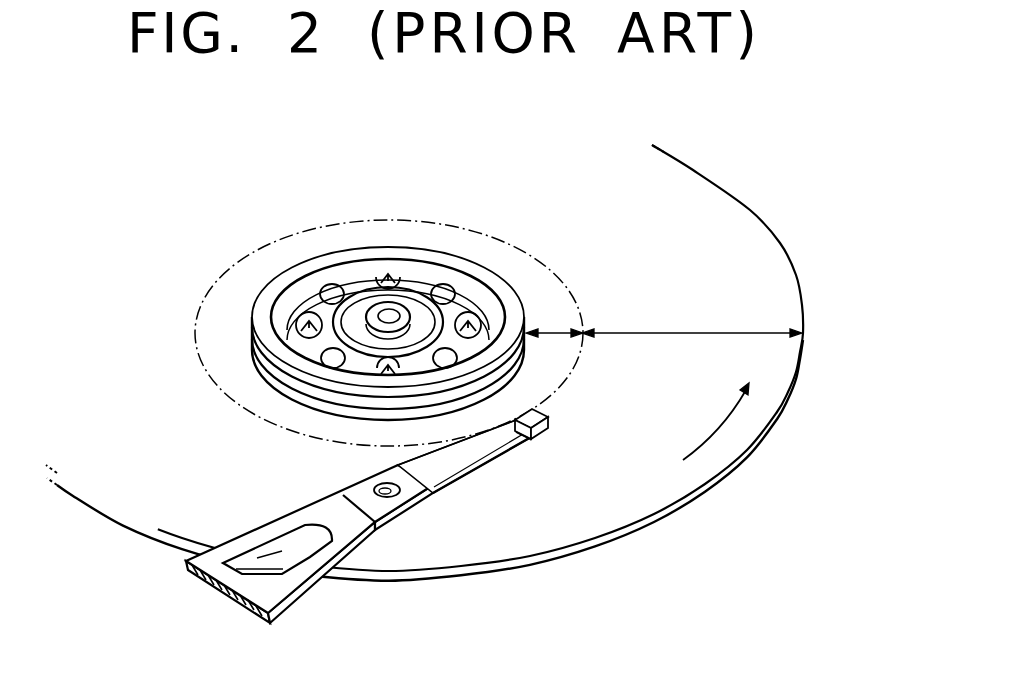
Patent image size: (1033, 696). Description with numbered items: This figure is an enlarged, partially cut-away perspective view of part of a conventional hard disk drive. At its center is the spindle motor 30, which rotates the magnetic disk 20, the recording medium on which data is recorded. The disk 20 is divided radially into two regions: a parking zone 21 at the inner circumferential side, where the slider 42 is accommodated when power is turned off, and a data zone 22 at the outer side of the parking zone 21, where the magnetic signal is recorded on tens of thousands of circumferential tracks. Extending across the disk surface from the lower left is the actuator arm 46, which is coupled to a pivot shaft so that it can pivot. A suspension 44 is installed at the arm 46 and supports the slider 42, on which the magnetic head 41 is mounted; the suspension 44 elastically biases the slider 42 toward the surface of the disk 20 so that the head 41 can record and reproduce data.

The magnetic disk 20 is at (667, 495).
The parking zone 21 is at (557, 328).
The data zone 22 is at (678, 330).
The spindle motor 30 is at (420, 278).
The magnetic head 41 is at (546, 436).
The slider 42 is at (528, 436).
The suspension 44 is at (442, 466).
The arm 46 is at (292, 522).